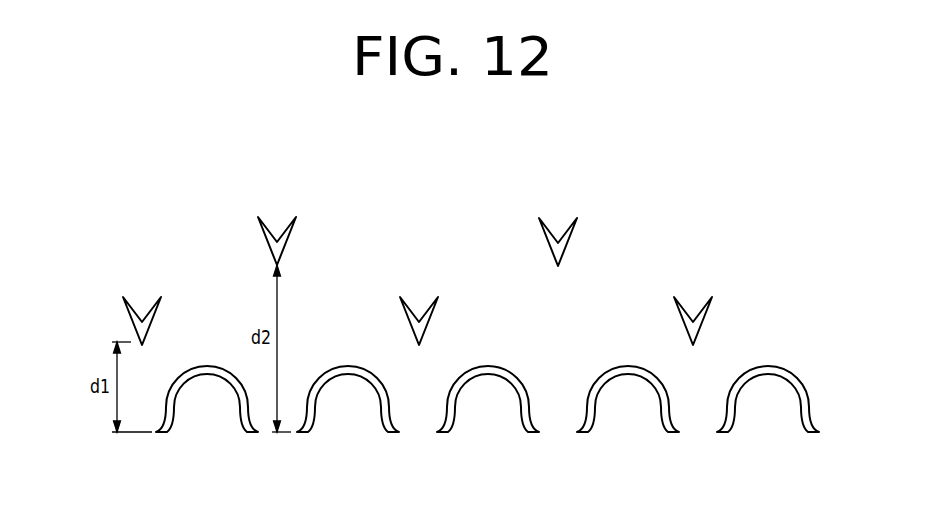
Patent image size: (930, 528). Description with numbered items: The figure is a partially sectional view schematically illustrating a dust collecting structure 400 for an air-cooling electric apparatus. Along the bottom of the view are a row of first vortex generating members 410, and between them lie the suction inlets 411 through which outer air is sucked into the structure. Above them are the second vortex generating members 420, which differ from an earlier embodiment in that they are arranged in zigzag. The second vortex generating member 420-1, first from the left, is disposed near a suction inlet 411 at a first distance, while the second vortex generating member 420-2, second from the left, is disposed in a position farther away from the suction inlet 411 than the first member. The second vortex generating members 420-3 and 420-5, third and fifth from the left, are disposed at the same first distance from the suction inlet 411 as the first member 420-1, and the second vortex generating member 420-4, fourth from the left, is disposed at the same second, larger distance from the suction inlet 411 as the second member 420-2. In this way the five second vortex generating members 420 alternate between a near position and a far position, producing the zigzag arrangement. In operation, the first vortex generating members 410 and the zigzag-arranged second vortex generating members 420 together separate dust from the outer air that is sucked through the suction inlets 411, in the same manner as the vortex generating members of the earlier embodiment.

The dust collecting structure 400 is at (463, 158).
The first vortex generating members 410 is at (487, 427).
The suction inlet 411 is at (550, 427).
The second vortex generating members 420 is at (657, 241).
The first second vortex generating member 420-1 is at (135, 323).
The second second vortex generating member 420-2 is at (270, 244).
The third second vortex generating member 420-3 is at (412, 324).
The fourth second vortex generating member 420-4 is at (551, 245).
The fifth second vortex generating member 420-5 is at (688, 320).